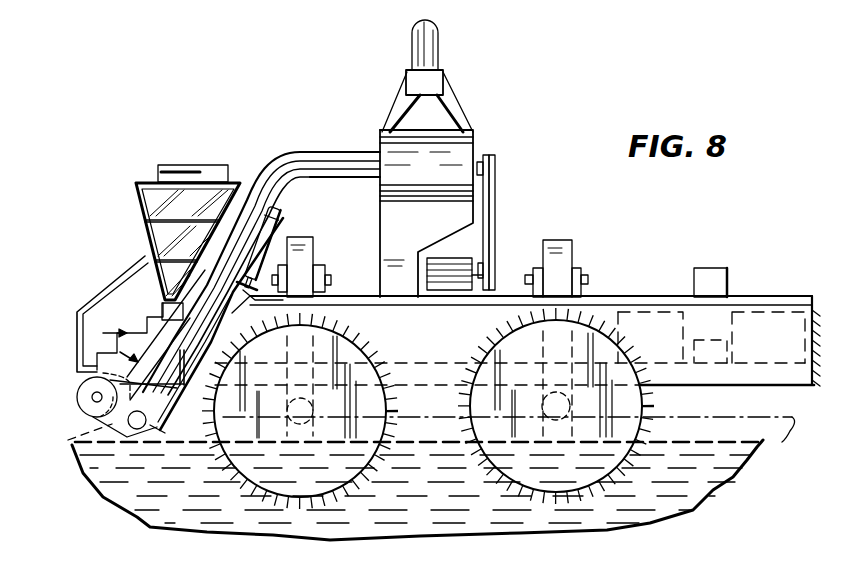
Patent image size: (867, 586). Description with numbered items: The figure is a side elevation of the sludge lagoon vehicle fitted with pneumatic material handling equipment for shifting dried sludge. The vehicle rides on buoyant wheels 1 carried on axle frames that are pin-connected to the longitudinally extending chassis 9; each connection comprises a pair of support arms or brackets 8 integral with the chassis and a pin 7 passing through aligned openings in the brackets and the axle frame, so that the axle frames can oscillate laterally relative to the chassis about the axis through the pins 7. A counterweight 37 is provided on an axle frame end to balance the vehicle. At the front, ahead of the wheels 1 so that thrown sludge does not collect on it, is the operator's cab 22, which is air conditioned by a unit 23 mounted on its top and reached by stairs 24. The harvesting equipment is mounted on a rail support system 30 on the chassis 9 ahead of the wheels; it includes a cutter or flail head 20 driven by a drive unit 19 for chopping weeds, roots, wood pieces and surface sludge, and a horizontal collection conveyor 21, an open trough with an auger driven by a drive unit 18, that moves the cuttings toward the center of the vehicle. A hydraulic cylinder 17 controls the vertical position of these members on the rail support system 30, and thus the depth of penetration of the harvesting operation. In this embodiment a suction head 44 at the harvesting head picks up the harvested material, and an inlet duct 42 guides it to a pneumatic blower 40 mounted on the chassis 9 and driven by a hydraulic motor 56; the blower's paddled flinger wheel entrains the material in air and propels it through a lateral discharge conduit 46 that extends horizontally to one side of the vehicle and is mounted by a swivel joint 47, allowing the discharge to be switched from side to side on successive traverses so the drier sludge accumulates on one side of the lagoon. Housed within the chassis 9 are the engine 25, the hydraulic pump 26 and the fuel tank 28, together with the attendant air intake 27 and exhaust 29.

The buoyant wheels 1 is at (375, 412).
The pin 7 is at (326, 279).
The support arms or brackets 8 is at (548, 262).
The chassis 9 is at (640, 297).
The hydraulic cylinder 17 is at (268, 236).
The drive unit 18 is at (140, 431).
The drive unit 19 is at (92, 398).
The cutter or flail head 20 is at (80, 391).
The horizontal collection conveyor 21 is at (72, 447).
The operator's cab 22 is at (136, 184).
The air conditioning unit 23 is at (192, 165).
The stairs 24 is at (100, 318).
The engine 25 is at (770, 312).
The hydraulic pump 26 is at (728, 288).
The air intake 27 is at (705, 340).
The fuel tank 28 is at (660, 312).
The exhaust 29 is at (815, 322).
The rail support system 30 is at (176, 430).
The counterweight 37 is at (352, 331).
The pneumatic blower 40 is at (490, 141).
The inlet duct 42 is at (262, 170).
The suction head 44 is at (77, 326).
The lateral discharge conduit 46 is at (437, 38).
The swivel joint 47 is at (440, 78).
The hydraulic motor 56 is at (440, 278).